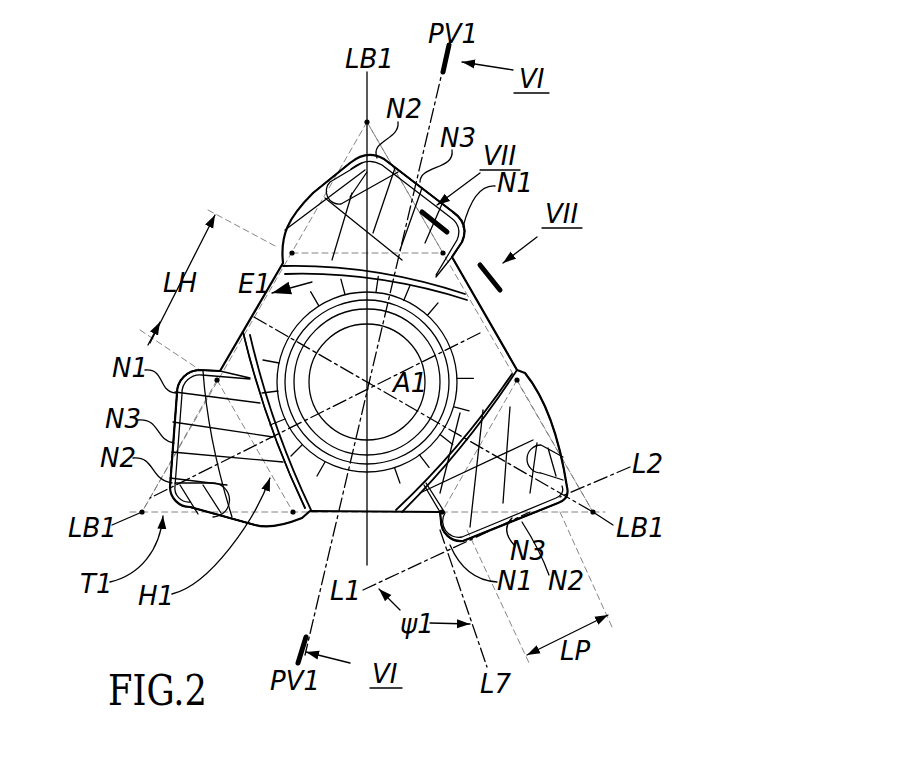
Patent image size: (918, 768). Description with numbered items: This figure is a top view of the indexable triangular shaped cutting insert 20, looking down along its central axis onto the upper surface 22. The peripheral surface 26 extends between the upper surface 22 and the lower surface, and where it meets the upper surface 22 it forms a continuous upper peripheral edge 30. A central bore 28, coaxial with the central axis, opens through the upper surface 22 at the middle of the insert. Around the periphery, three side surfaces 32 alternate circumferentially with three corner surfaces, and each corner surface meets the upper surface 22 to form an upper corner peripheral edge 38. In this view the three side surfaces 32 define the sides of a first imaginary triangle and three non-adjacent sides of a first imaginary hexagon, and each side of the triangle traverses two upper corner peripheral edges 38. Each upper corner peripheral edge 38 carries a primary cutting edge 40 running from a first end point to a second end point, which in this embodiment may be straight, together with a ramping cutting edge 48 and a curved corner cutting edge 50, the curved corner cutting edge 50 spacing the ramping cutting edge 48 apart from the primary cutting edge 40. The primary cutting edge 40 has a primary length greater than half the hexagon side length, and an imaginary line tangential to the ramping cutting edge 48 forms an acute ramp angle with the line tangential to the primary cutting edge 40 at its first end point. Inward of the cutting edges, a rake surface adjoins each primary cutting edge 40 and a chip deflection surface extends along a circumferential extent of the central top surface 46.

The cutting insert 20 is at (540, 292).
The upper surface 22 is at (470, 367).
The peripheral surface 26 is at (528, 368).
The central bore 28 is at (355, 395).
The upper peripheral edge 30 is at (266, 525).
The side surfaces 32 is at (253, 308).
The upper corner peripheral edge 38 is at (314, 192).
The primary cutting edge 40 is at (447, 207).
The top surface 46 is at (278, 354).
The ramping cutting edge 48 is at (462, 263).
The curved corner cutting edge 50 is at (466, 240).